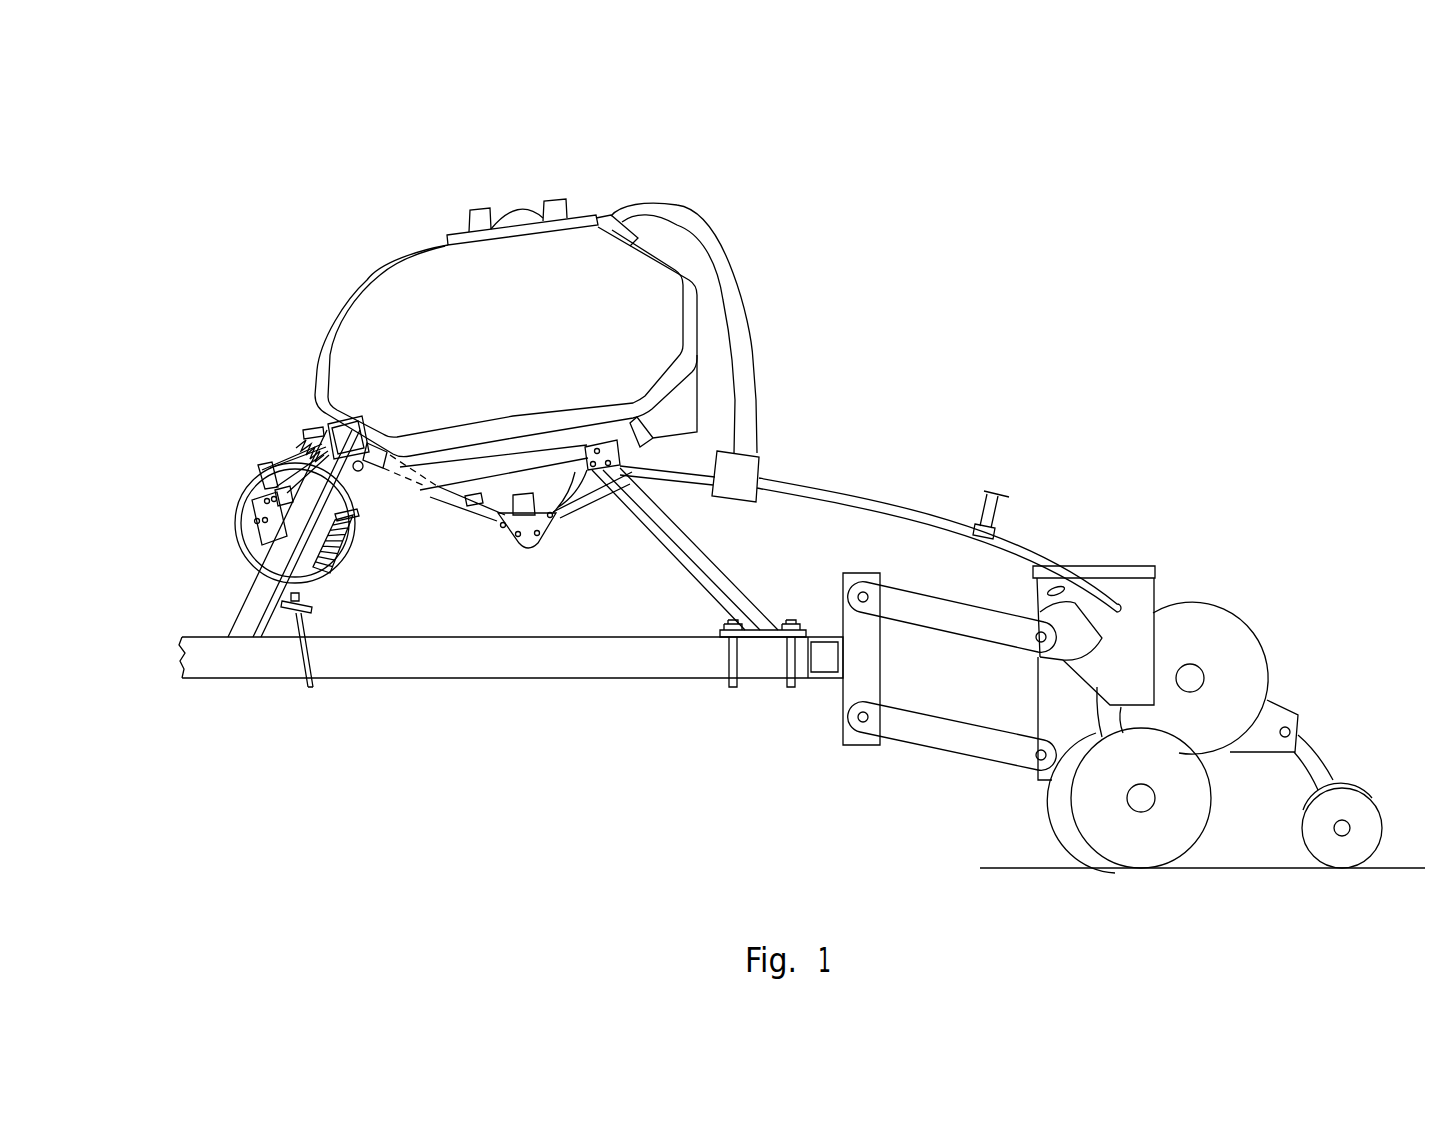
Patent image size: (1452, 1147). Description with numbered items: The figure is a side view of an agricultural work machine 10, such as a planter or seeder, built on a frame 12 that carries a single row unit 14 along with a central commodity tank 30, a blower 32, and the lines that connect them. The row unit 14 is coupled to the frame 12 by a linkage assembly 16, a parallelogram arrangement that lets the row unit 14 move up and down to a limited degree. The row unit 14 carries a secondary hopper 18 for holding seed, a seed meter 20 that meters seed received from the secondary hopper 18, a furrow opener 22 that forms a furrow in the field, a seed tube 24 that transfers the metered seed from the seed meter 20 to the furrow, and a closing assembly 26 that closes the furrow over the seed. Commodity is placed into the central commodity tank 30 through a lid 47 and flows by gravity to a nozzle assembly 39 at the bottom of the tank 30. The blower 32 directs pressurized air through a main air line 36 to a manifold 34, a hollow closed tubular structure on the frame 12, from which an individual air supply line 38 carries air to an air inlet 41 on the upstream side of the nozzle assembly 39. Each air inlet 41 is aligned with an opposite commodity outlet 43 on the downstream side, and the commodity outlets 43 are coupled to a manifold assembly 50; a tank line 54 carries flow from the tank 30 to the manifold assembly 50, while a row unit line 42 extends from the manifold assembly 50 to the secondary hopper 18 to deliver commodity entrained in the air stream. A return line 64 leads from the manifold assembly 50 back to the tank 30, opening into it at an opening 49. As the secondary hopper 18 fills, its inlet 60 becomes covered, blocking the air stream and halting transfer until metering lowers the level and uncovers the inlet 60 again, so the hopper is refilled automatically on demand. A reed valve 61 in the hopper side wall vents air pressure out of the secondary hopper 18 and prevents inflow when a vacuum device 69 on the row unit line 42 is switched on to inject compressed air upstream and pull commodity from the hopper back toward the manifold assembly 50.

The agricultural work machine 10 is at (980, 186).
The frame 12 is at (422, 683).
The row unit 14 is at (1118, 561).
The linkage assembly 16 is at (918, 757).
The secondary hopper 18 is at (1107, 682).
The seed meter 20 is at (1180, 654).
The furrow opener 22 is at (1054, 853).
The seed tube 24 is at (1050, 705).
The closing assembly 26 is at (1347, 795).
The central commodity tank 30 is at (530, 332).
The blower 32 is at (253, 535).
The manifold 34 is at (330, 435).
The main air line 36 is at (303, 447).
The air supply line 38 is at (371, 470).
The nozzle assembly 39 is at (530, 553).
The air inlet 41 is at (503, 527).
The row unit line 42 is at (838, 512).
The commodity outlet 43 is at (557, 520).
The lid 47 is at (520, 208).
The opening 49 is at (624, 217).
The manifold assembly 50 is at (763, 453).
The tank line 54 is at (578, 500).
The inlet 60 is at (1158, 610).
The reed valve 61 is at (1035, 596).
The return line 64 is at (740, 315).
The vacuum device 69 is at (977, 532).